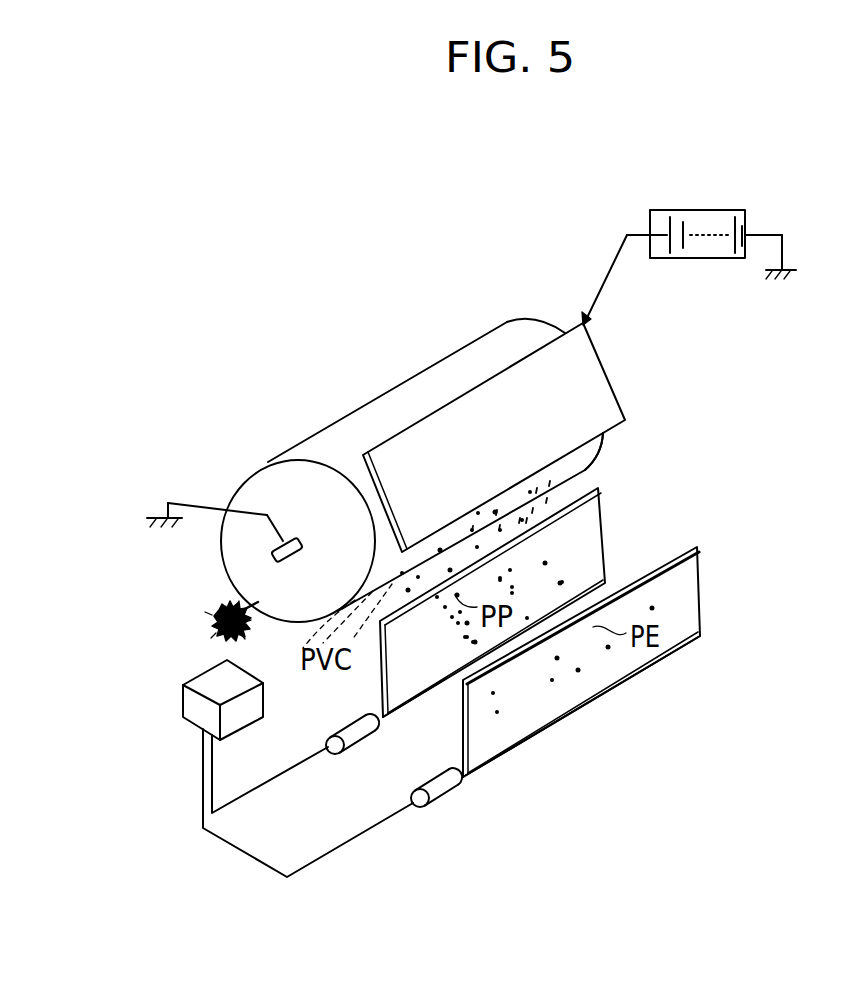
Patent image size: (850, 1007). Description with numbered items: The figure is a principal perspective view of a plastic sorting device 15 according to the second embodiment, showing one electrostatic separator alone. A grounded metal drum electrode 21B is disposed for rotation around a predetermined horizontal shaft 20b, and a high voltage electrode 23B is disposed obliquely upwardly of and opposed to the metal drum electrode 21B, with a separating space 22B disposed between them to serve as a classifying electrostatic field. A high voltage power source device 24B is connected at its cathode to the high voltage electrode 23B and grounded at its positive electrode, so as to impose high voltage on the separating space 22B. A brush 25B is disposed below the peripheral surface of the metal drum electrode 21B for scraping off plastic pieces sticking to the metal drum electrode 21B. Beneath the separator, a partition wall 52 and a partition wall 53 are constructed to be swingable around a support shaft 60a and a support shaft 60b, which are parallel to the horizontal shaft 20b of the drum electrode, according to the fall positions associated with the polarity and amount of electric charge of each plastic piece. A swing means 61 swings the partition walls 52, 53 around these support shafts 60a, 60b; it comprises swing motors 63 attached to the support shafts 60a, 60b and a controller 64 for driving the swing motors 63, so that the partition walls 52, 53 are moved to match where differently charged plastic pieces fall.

The plastic sorting device 15 is at (722, 430).
The metal drum electrode 21B is at (466, 343).
The horizontal shaft 20b is at (268, 512).
The separating space 22B is at (576, 487).
The high voltage electrode 23B is at (589, 375).
The high voltage power source device 24B is at (703, 210).
The brush 25B is at (212, 630).
The partition wall 52 is at (596, 528).
The partition wall 53 is at (688, 578).
The support shaft 60a is at (428, 693).
The support shaft 60b is at (603, 698).
The swing means 61 is at (352, 780).
The swing motor 63 is at (360, 736).
The controller 64 is at (184, 718).